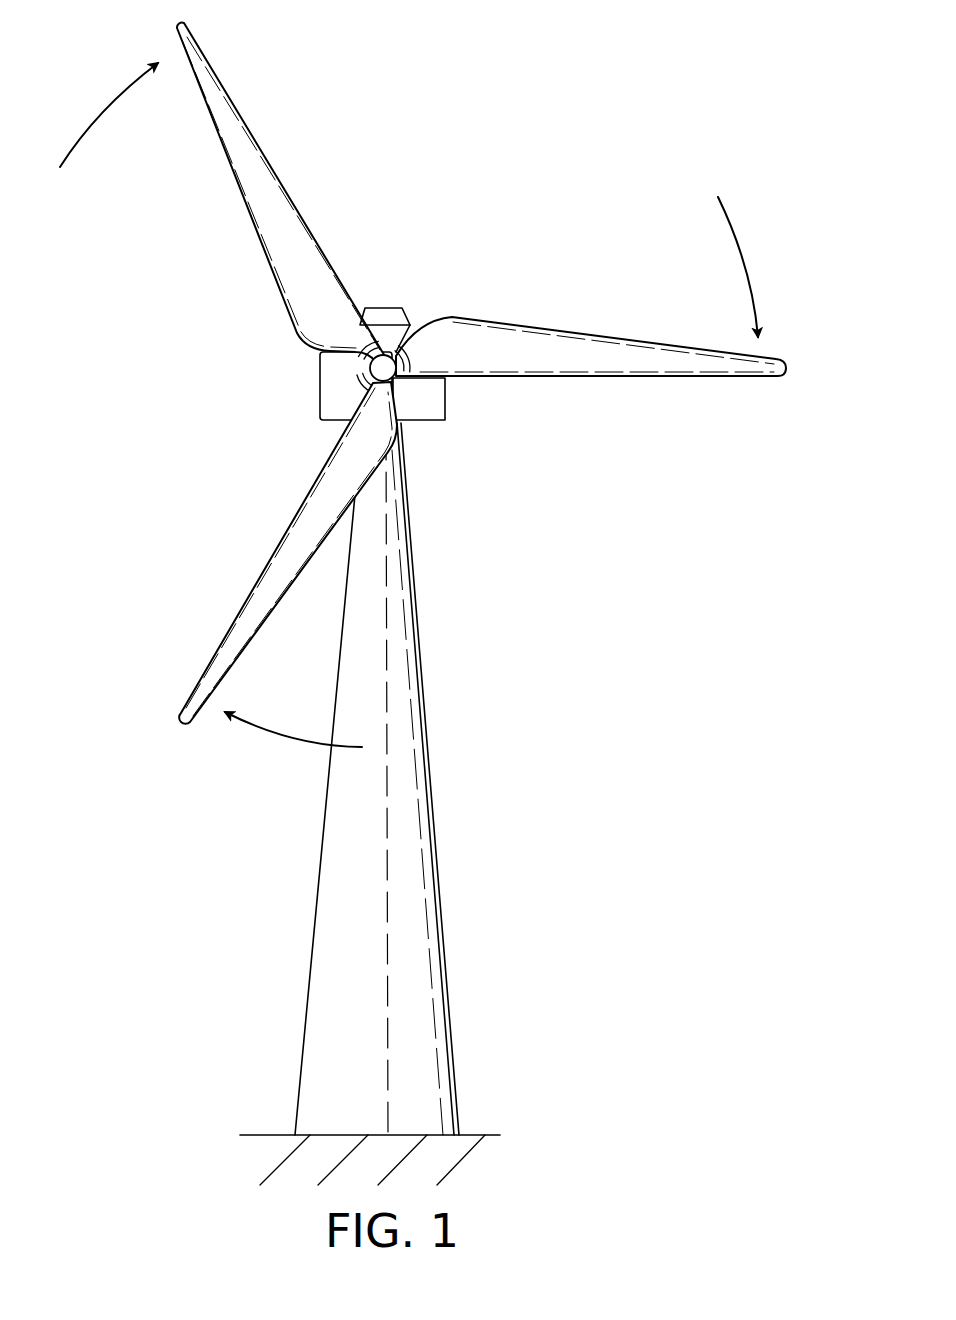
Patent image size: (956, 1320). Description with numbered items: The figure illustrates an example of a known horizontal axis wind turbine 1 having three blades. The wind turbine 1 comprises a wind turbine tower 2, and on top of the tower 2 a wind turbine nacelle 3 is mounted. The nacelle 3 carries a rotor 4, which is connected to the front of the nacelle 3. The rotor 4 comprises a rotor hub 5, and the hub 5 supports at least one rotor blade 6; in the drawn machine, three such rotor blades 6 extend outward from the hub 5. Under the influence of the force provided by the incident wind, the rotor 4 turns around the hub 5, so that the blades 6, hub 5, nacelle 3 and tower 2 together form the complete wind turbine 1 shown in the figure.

The horizontal axis wind turbine 1 is at (423, 604).
The wind turbine tower 2 is at (433, 820).
The wind turbine nacelle 3 is at (438, 404).
The rotor 4 is at (423, 385).
The rotor hub 5 is at (385, 362).
The rotor blade 6 is at (626, 355).